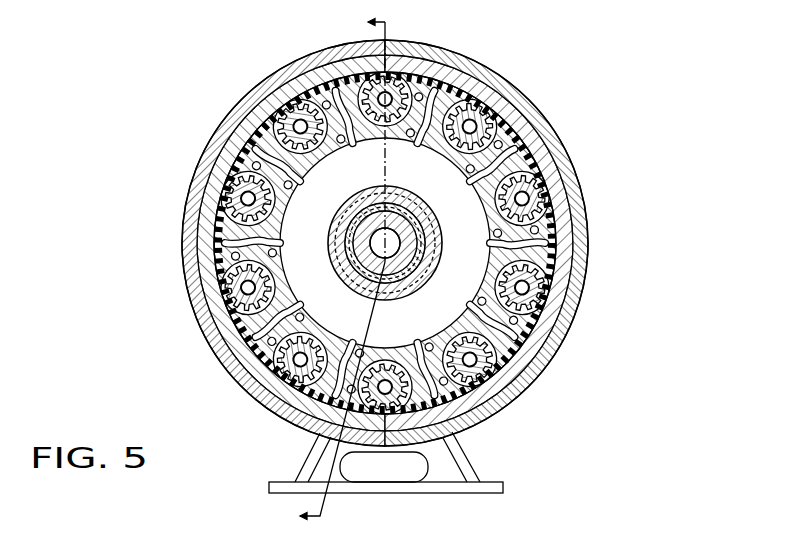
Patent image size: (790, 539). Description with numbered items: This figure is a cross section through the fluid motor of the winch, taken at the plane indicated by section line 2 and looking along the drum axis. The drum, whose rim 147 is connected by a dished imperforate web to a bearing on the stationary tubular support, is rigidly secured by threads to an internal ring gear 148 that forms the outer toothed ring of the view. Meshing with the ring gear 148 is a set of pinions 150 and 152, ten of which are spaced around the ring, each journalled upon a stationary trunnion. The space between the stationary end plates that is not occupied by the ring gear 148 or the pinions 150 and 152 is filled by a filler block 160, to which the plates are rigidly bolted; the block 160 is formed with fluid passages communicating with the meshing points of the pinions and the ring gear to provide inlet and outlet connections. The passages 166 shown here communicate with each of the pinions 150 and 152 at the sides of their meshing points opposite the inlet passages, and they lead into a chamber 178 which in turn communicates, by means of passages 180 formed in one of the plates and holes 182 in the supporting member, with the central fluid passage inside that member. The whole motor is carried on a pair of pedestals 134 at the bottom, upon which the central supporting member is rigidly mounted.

The section line 2— 2 is at (336, 270).
The pedestals 134 is at (470, 463).
The rim 147 is at (572, 177).
The internal ring gear 148 is at (283, 78).
The pinions 150 is at (425, 68).
The pinions 152 is at (482, 103).
The filler block 160 is at (432, 267).
The passages 166 is at (349, 100).
The chamber 178 is at (420, 243).
The passages 180 is at (425, 203).
The holes 182 is at (345, 212).